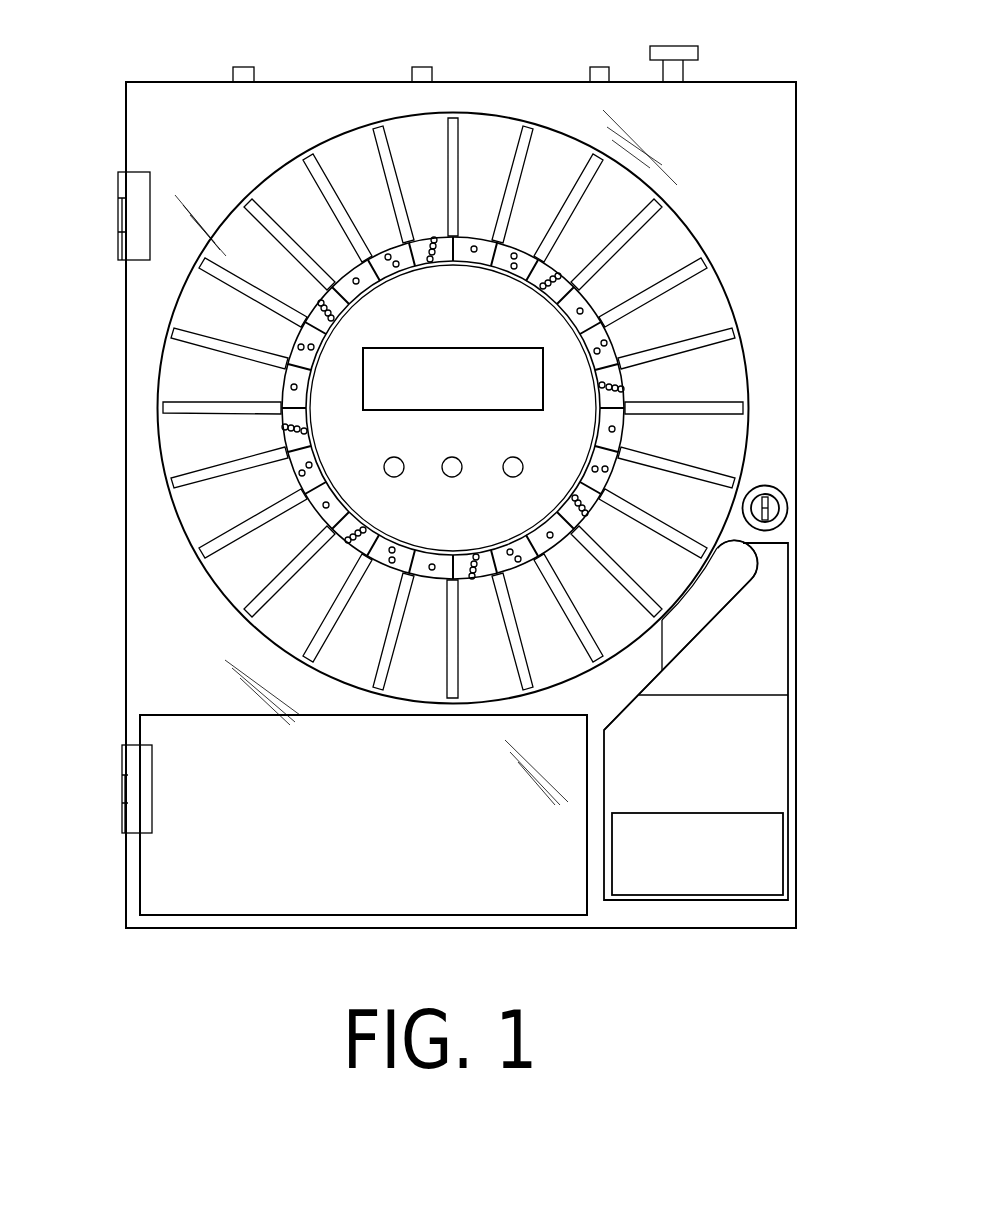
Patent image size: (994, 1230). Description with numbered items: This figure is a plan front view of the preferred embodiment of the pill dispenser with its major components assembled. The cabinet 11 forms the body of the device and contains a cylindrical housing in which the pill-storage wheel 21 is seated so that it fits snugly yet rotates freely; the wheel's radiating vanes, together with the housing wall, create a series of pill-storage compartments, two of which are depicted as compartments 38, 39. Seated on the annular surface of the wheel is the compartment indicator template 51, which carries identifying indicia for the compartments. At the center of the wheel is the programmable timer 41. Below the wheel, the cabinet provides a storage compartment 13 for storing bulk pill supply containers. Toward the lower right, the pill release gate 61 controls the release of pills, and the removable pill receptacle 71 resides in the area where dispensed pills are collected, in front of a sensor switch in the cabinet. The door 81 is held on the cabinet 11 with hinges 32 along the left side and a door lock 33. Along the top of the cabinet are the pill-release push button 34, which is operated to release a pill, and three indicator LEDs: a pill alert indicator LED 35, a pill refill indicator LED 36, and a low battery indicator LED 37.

The cabinet 11 is at (752, 157).
The storage compartment 13 is at (175, 862).
The pill-storage wheel 21 is at (627, 235).
The hinges 32 is at (118, 760).
The door lock 33 is at (780, 503).
The pill-release push button 34 is at (700, 45).
The pill alert indicator LED 35 is at (588, 66).
The pill refill indicator LED 36 is at (435, 65).
The low battery indicator LED 37 is at (258, 64).
The pill-storage compartment 38 is at (705, 520).
The pill-storage compartment 39 is at (675, 573).
The programmable timer 41 is at (580, 415).
The compartment indicator template 51 is at (284, 385).
The pill release gate 61 is at (675, 640).
The removable pill receptacle 71 is at (692, 813).
The door 81 is at (768, 640).